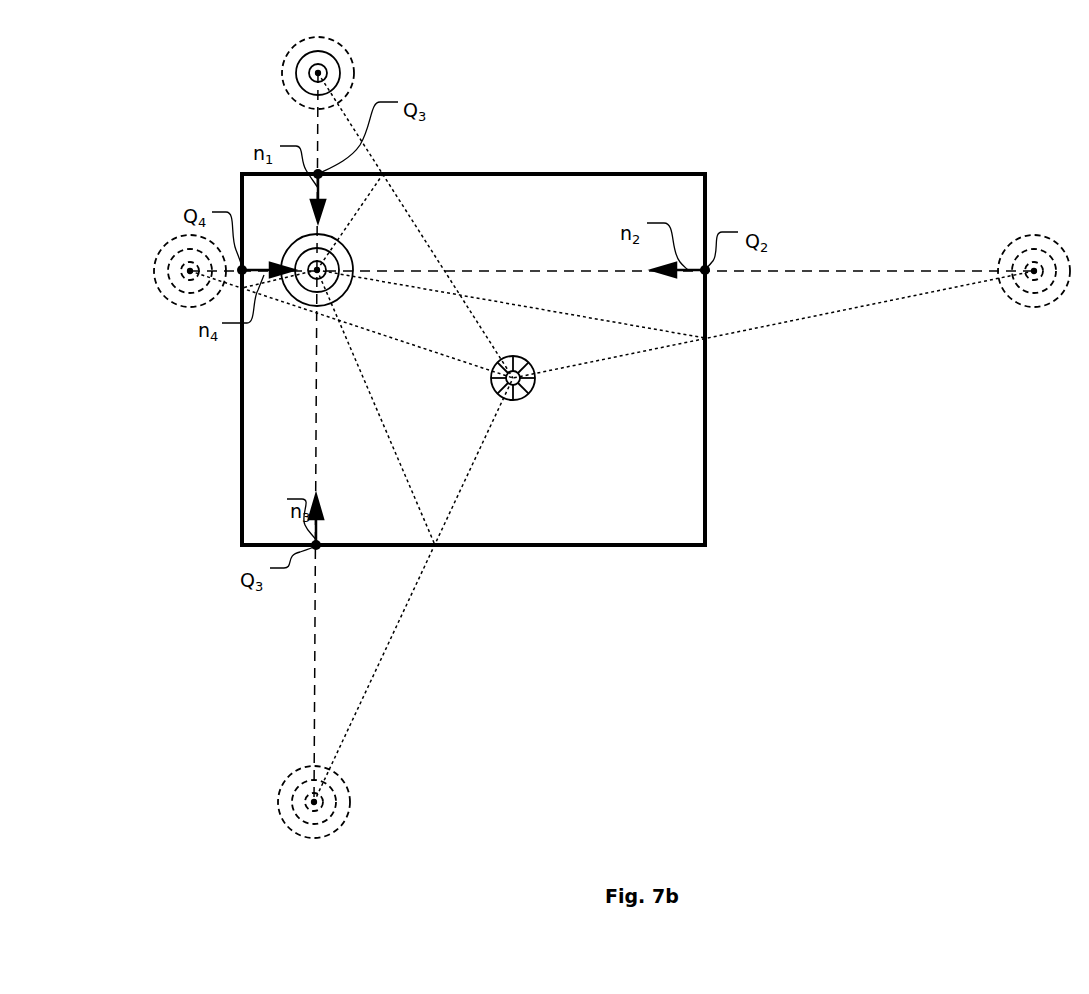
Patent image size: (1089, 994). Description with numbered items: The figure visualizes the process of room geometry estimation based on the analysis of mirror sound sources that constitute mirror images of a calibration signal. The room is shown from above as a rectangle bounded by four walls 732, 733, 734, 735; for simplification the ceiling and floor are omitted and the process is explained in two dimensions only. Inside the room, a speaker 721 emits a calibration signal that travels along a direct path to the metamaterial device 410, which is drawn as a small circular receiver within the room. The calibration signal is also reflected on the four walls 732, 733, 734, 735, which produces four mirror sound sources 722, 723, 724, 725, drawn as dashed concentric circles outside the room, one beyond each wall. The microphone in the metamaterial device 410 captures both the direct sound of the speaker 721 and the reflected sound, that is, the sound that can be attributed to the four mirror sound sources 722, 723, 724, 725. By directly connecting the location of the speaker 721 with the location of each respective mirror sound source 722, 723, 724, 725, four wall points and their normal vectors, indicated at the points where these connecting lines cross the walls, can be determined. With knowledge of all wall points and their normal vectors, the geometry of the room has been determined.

The metamaterial device 410 is at (522, 397).
The speaker 721 is at (317, 266).
The mirror sound source 722 is at (190, 271).
The mirror sound source 723 is at (318, 73).
The mirror sound source 724 is at (1034, 271).
The mirror sound source 725 is at (314, 802).
The wall 732 is at (242, 407).
The wall 733 is at (552, 174).
The wall 734 is at (705, 418).
The wall 735 is at (523, 546).